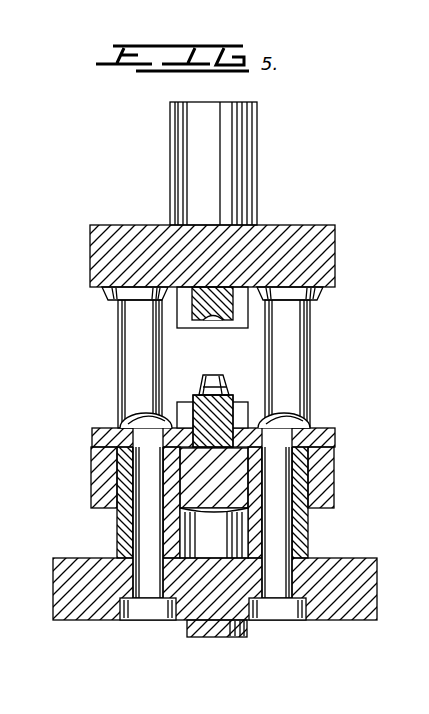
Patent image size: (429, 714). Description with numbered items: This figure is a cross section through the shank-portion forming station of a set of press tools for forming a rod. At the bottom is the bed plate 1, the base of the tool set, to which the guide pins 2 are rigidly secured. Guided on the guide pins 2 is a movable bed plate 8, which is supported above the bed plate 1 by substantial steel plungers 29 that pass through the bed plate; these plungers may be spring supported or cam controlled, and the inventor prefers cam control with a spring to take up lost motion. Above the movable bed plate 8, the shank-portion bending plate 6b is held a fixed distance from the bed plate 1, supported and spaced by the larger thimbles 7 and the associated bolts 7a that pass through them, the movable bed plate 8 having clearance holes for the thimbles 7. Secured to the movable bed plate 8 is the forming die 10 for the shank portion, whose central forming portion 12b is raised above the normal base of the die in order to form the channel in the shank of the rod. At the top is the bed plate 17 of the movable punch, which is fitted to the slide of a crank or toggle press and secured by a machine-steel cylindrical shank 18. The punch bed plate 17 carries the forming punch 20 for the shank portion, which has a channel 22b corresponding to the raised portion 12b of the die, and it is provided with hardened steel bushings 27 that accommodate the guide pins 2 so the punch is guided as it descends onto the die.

The bed plate 1 is at (73, 598).
The guide pins 2 is at (118, 336).
The shank portion bending plate 6b is at (92, 430).
The thimbles 7 is at (125, 520).
The tie rods 7a is at (140, 478).
The movable bed plate 8 is at (332, 481).
The forming die for the shank portion 10 is at (228, 416).
The raised central forming portion 12b is at (200, 397).
The bed plate of movable punch 17 is at (151, 233).
The cylindrical shank 18 is at (213, 163).
The forming punch for the shank portion 20 is at (243, 312).
The channel 22b is at (212, 323).
The hardened steel bushings 27 is at (103, 295).
The steel plungers 29 is at (214, 533).